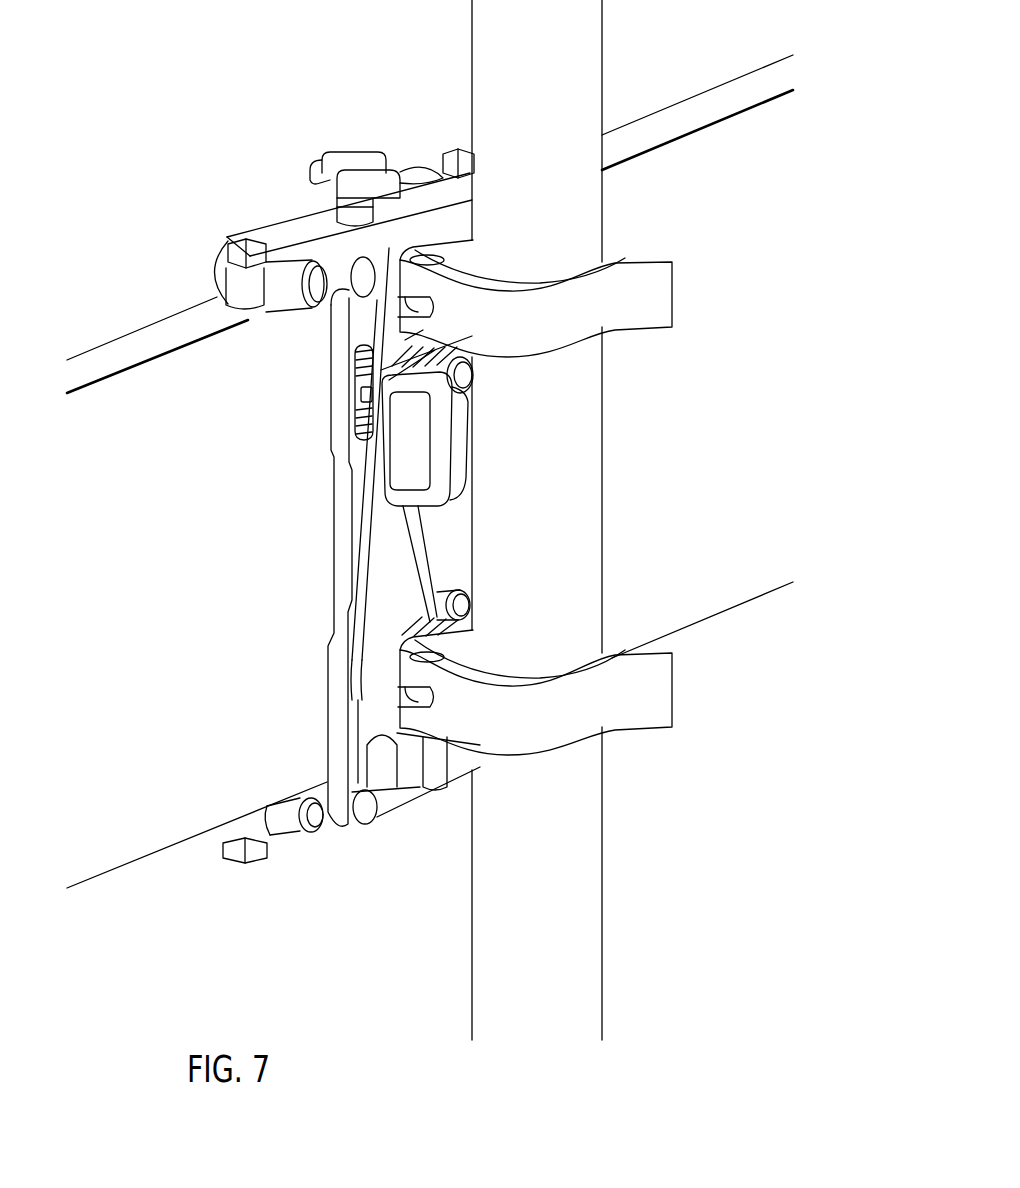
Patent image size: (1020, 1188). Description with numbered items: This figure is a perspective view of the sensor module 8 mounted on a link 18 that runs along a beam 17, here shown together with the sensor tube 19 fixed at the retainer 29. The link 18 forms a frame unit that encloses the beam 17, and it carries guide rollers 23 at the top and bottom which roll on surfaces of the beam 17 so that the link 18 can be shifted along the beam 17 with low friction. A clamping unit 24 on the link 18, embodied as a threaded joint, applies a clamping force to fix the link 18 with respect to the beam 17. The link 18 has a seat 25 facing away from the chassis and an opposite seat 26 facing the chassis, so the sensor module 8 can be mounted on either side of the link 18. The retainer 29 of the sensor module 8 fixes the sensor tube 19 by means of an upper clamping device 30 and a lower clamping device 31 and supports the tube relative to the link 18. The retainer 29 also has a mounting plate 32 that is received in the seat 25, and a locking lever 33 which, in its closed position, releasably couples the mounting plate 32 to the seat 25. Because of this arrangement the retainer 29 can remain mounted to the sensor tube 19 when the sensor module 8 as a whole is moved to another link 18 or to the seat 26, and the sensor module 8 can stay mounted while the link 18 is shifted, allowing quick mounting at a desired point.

The sensor module 8 is at (620, 418).
The beam 17 is at (169, 467).
The link 18 is at (318, 846).
The sensor tube 19 is at (603, 40).
The guide rollers 23 is at (293, 318).
The clamping unit 24 is at (354, 151).
The seat 25 is at (330, 492).
The seat 26 is at (215, 290).
The retainer 29 is at (362, 513).
The upper clamping device 30 is at (643, 298).
The lower clamping device 31 is at (645, 692).
The mounting plate 32 is at (362, 590).
The locking lever 33 is at (345, 422).